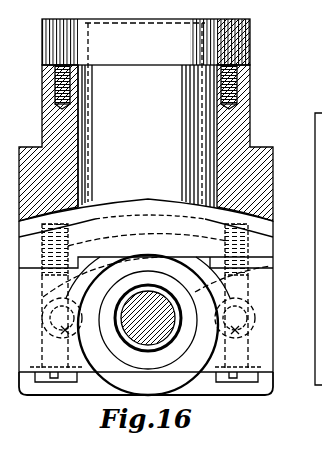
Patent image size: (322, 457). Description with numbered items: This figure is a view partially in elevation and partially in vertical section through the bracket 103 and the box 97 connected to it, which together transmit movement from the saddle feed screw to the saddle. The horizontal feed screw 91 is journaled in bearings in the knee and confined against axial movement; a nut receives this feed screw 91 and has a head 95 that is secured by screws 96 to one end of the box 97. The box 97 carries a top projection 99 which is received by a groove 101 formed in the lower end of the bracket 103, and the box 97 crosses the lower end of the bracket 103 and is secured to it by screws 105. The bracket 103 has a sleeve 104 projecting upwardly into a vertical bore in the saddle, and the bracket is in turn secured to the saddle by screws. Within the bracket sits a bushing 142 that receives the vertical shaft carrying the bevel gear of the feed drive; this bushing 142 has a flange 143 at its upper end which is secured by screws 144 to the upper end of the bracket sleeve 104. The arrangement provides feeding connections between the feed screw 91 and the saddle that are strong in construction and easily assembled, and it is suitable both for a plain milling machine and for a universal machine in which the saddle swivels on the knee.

The flange 143 is at (225, 50).
The screws 144 is at (230, 90).
The sleeve 104 is at (252, 120).
The bushing 142 is at (146, 115).
The bracket 103 is at (272, 216).
The groove 101 is at (183, 262).
The top projection 99 is at (248, 256).
The feed screw 91 is at (168, 305).
The screws 96 is at (228, 317).
The box 97 is at (264, 348).
The head 95 is at (236, 362).
The screws 105 is at (40, 383).